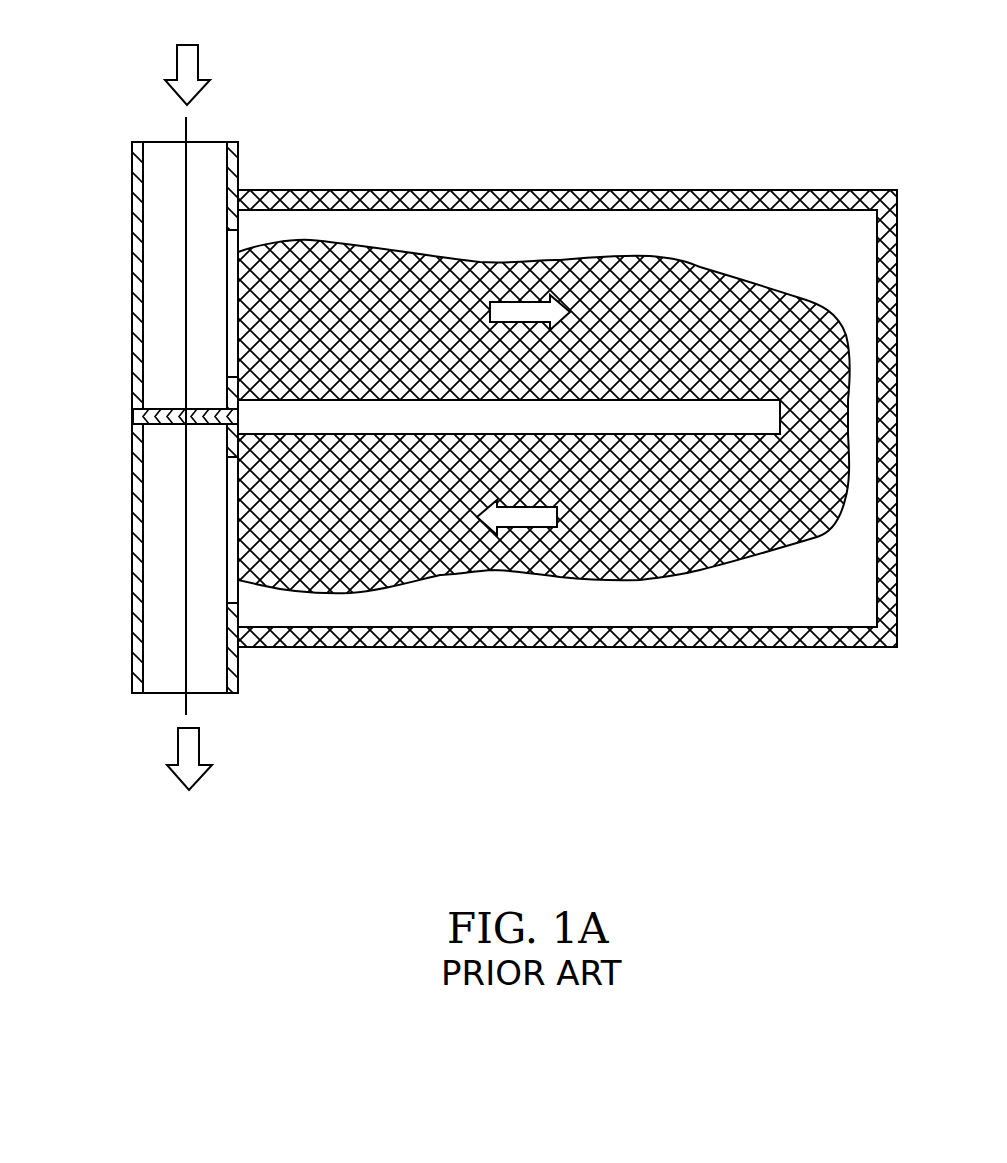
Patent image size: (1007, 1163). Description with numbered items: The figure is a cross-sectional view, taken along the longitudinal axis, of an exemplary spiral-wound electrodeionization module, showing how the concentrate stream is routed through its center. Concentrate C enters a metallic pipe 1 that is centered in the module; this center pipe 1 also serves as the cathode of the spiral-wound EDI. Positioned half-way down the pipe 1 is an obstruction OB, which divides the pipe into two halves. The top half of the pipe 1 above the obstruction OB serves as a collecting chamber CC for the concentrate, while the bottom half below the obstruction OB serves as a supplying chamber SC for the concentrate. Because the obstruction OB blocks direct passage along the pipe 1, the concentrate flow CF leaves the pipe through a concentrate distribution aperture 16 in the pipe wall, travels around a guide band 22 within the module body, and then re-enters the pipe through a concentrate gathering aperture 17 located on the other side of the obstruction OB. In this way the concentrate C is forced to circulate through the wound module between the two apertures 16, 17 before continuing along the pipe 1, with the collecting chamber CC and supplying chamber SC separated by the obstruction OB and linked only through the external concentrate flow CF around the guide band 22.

The metallic pipe 1 is at (233, 163).
The concentrate C is at (195, 58).
The collecting chamber CC is at (168, 190).
The supplying chamber SC is at (157, 553).
The obstruction OB is at (165, 403).
The concentrate distribution aperture 16 is at (232, 280).
The concentrate gathering aperture 17 is at (233, 520).
The concentrate flow CF is at (532, 310).
The guide band 22 is at (748, 415).